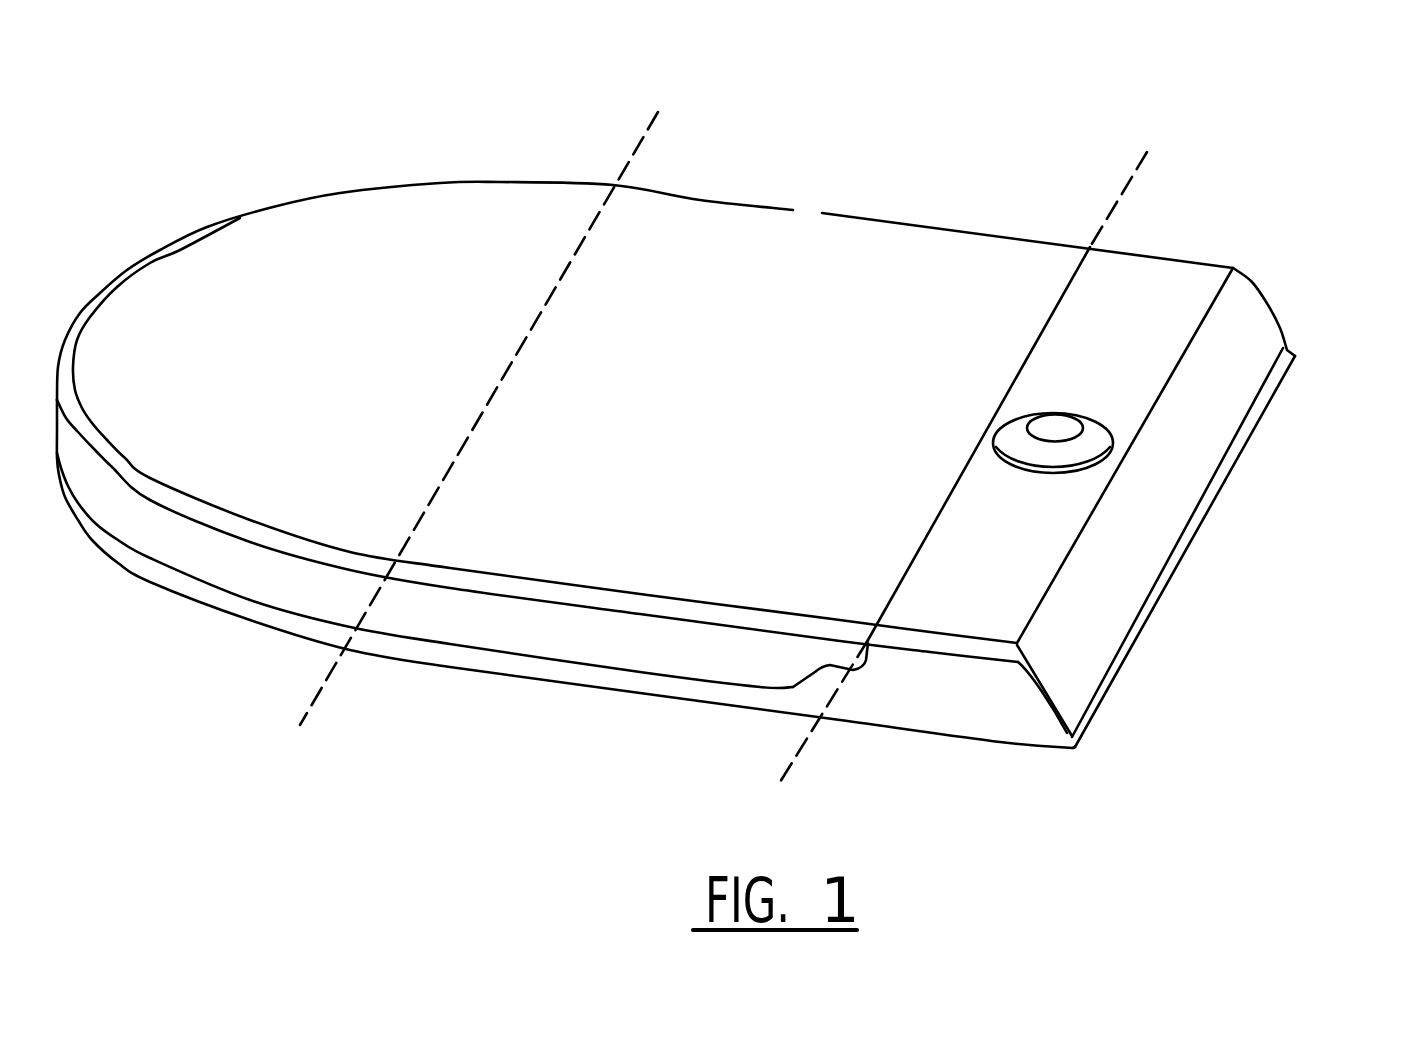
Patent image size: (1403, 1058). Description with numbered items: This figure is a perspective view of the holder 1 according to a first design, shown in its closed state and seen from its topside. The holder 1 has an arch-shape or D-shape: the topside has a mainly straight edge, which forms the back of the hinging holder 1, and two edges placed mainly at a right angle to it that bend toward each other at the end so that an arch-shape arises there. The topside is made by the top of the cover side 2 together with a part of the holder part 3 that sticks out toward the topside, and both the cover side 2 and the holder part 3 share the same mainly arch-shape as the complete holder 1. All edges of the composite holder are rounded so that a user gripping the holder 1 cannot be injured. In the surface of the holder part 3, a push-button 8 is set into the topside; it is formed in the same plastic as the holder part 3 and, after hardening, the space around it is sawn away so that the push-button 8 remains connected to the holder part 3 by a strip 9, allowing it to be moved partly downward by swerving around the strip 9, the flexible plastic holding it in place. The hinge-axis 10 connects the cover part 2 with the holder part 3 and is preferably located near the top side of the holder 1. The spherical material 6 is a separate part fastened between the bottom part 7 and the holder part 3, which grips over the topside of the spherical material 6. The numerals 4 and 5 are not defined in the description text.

The holder 1 is at (798, 153).
The cover side 2 is at (930, 253).
The holder part 3 is at (1160, 280).
The base body 4 is at (313, 687).
The end side 5 is at (1240, 565).
The spherical material 6 is at (1250, 317).
The bottom part 7 is at (1123, 648).
The push-button 8 is at (1062, 393).
The strip 9 is at (1123, 430).
The hinge-axis 10 is at (790, 758).